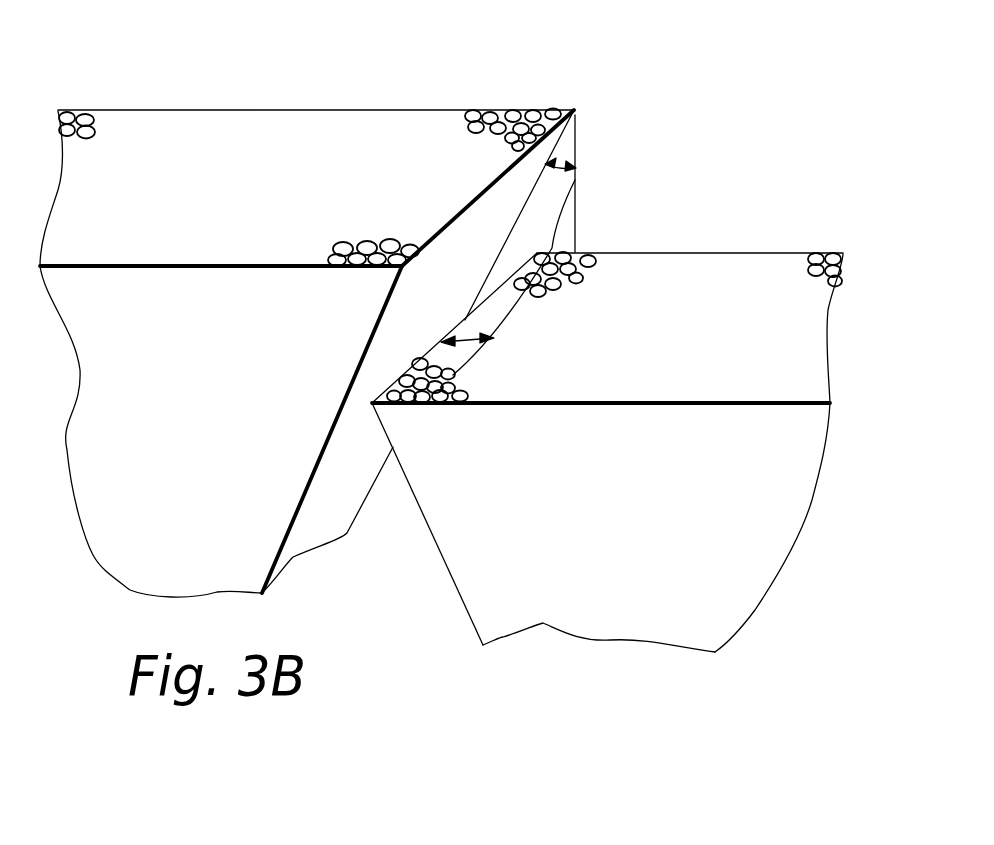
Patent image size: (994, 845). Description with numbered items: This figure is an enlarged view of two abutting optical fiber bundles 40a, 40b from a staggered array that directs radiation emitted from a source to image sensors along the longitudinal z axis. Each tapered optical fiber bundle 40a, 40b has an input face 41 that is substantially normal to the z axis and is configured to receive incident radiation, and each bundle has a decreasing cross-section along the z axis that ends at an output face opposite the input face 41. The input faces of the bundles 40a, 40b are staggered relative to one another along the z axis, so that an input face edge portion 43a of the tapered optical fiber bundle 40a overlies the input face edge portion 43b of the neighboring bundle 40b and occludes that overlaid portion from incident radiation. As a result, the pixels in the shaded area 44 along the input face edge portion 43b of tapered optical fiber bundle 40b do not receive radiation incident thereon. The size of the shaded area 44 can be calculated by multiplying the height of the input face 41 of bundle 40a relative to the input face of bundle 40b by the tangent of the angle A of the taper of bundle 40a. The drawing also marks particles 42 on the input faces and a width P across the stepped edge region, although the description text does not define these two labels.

The tapered optical fiber bundle 40a is at (293, 557).
The tapered optical fiber bundle 40b is at (472, 583).
The input face 41 is at (267, 111).
The abrasive particles 42 is at (517, 113).
The input face edge portion 43a is at (574, 110).
The input face edge portion 43b is at (575, 180).
The shaded area 44 is at (574, 252).
The angle of the taper A is at (561, 166).
The cut width P is at (470, 345).